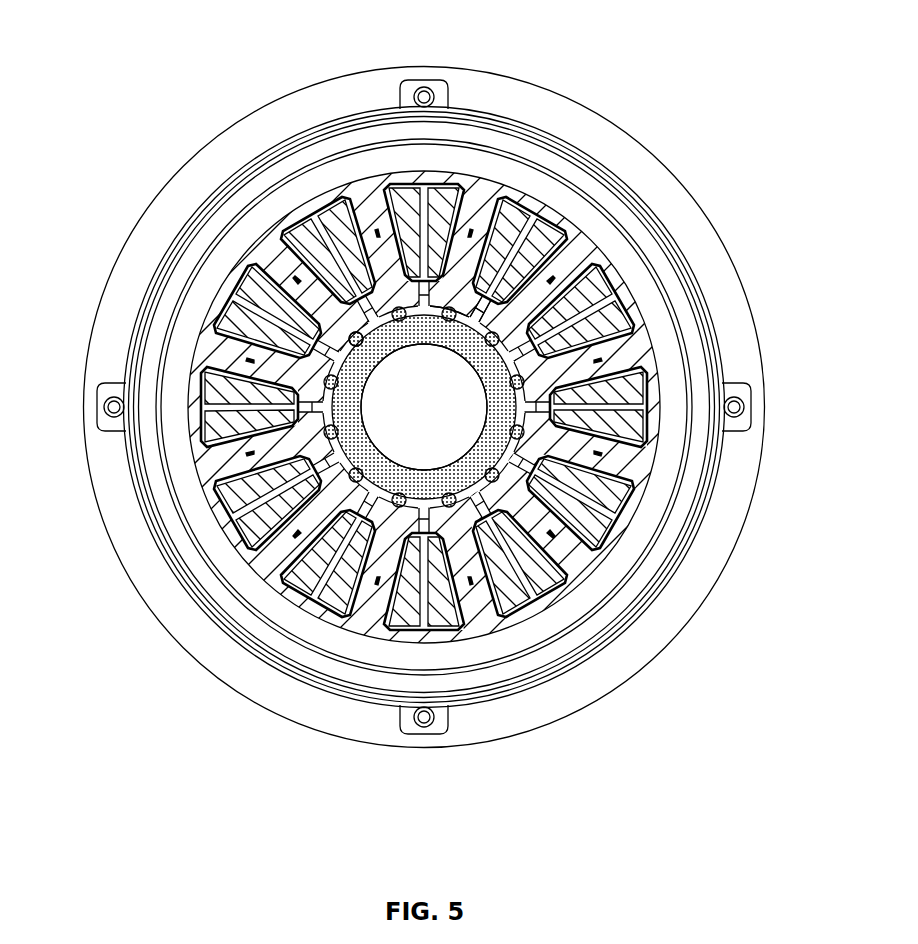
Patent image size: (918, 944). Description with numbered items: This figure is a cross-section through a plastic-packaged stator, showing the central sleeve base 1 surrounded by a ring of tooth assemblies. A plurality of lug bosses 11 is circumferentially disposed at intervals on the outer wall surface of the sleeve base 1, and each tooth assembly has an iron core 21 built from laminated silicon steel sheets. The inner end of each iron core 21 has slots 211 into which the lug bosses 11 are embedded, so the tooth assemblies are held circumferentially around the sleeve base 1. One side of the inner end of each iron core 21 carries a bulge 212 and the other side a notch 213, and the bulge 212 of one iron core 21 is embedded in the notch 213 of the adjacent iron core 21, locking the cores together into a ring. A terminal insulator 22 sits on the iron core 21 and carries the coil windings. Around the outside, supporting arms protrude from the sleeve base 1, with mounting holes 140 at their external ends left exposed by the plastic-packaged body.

The sleeve base 1 is at (348, 388).
The lug bosses 11 is at (346, 372).
The iron core 21 is at (215, 463).
The slots 211 is at (354, 335).
The bulge 212 is at (470, 312).
The notch 213 is at (505, 298).
The terminal insulator 22 is at (322, 374).
The mounting holes 140 is at (745, 405).